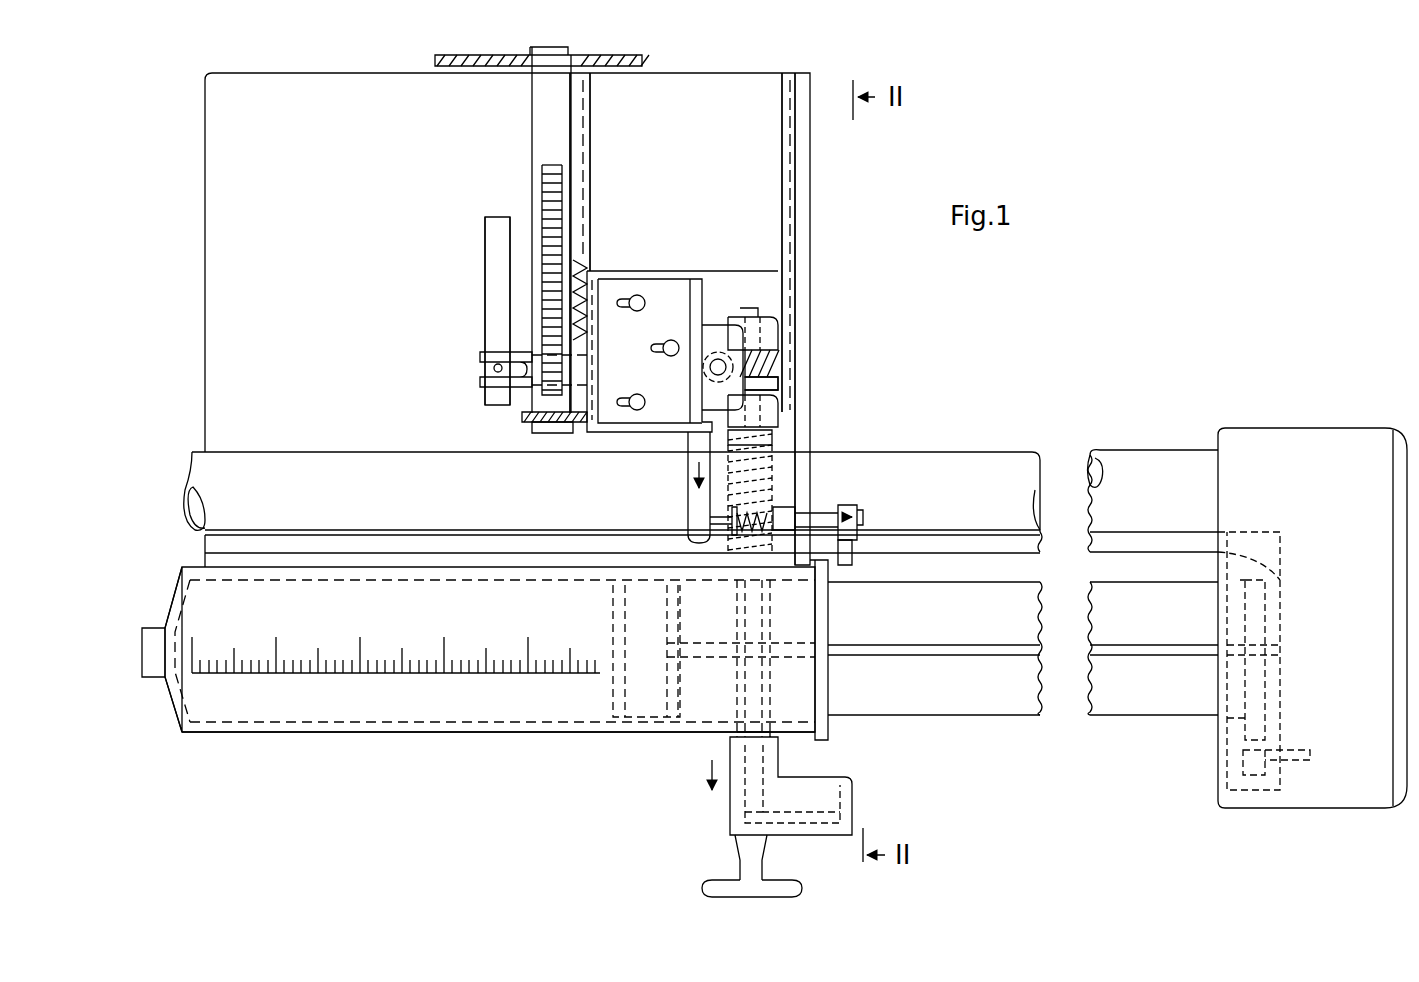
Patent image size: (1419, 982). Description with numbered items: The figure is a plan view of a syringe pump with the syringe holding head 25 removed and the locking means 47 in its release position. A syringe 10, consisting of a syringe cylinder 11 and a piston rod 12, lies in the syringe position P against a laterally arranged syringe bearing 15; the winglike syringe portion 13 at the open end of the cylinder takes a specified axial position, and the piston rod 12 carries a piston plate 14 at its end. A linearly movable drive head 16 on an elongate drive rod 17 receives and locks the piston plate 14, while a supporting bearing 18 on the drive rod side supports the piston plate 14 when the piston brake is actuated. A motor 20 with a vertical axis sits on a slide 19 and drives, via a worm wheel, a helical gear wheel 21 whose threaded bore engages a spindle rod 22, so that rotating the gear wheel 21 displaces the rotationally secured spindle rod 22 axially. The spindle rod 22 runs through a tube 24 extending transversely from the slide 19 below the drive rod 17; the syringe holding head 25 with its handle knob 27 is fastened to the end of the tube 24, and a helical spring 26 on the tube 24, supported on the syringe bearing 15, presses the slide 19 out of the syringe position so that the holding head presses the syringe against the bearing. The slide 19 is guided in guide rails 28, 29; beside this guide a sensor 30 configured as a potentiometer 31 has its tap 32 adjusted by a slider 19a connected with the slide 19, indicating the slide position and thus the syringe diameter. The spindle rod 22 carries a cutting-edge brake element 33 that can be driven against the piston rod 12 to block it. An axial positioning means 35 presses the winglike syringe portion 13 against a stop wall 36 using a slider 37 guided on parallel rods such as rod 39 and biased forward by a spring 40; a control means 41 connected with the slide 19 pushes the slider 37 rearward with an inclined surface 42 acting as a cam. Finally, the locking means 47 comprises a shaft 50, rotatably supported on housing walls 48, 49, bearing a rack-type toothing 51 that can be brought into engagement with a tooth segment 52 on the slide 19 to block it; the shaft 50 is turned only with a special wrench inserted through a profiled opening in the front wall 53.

The syringe 10 is at (565, 736).
The syringe cylinder 11 is at (467, 697).
The piston rod 12 is at (975, 700).
The winglike syringe portion 13 is at (828, 617).
The piston plate 14 is at (1278, 650).
The syringe bearing 15 is at (580, 569).
The drive head 16 is at (1336, 455).
The drive rod 17 is at (1005, 468).
The supporting bearing 18 is at (1143, 538).
The slide 19 is at (708, 270).
The slider 19a is at (518, 392).
The motor 20 is at (718, 325).
The helical gear wheel 21 is at (768, 362).
The spindle rod 22 is at (770, 385).
The tube 24 is at (768, 737).
The syringe holding head 25 is at (810, 833).
The helical spring 26 is at (772, 462).
The handle knob 27 is at (740, 875).
The guide rail 28 is at (585, 150).
The guide rail 29 is at (782, 130).
The sensor 30 is at (482, 300).
The potentiometer 31 is at (487, 228).
The tap 32 is at (478, 368).
The brake element 33 is at (845, 790).
The axial positioning means 35 is at (862, 505).
The stop wall 36 is at (857, 535).
The slider 37 is at (852, 563).
The rod 39 is at (820, 513).
The spring 40 is at (730, 518).
The control means 41 is at (690, 463).
The inclined surface 42 is at (740, 545).
The locking means 47 is at (526, 181).
The housing wall 48 is at (443, 62).
The housing wall 49 is at (518, 423).
The shaft 50 is at (532, 103).
The rack-type toothing 51 is at (546, 215).
The tooth segment 52 is at (582, 262).
The front wall 53 is at (595, 60).
The syringe position P is at (366, 735).